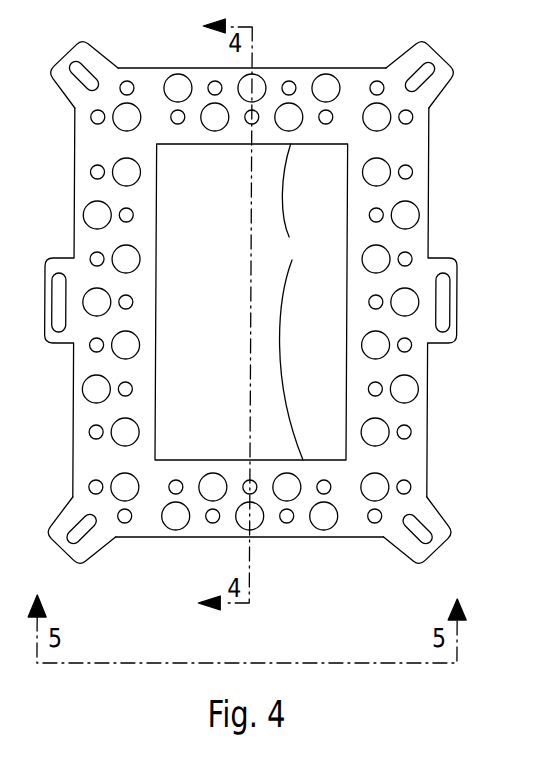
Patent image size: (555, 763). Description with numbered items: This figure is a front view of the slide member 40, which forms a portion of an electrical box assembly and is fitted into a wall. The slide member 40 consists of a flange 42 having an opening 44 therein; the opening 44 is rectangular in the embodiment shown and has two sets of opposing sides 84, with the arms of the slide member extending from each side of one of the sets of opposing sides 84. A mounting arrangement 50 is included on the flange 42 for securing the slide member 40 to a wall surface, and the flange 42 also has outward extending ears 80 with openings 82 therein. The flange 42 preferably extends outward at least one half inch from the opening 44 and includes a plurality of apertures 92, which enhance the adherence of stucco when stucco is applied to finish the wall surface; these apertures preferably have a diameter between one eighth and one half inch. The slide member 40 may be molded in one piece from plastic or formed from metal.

The slide member 40 is at (296, 349).
The flange 42 is at (429, 207).
The opening 44 is at (229, 286).
The mounting arrangement 50 is at (448, 98).
The ears 80 is at (465, 516).
The openings 82 is at (420, 528).
The opposing sides 84 is at (292, 302).
The apertures 92 is at (405, 388).